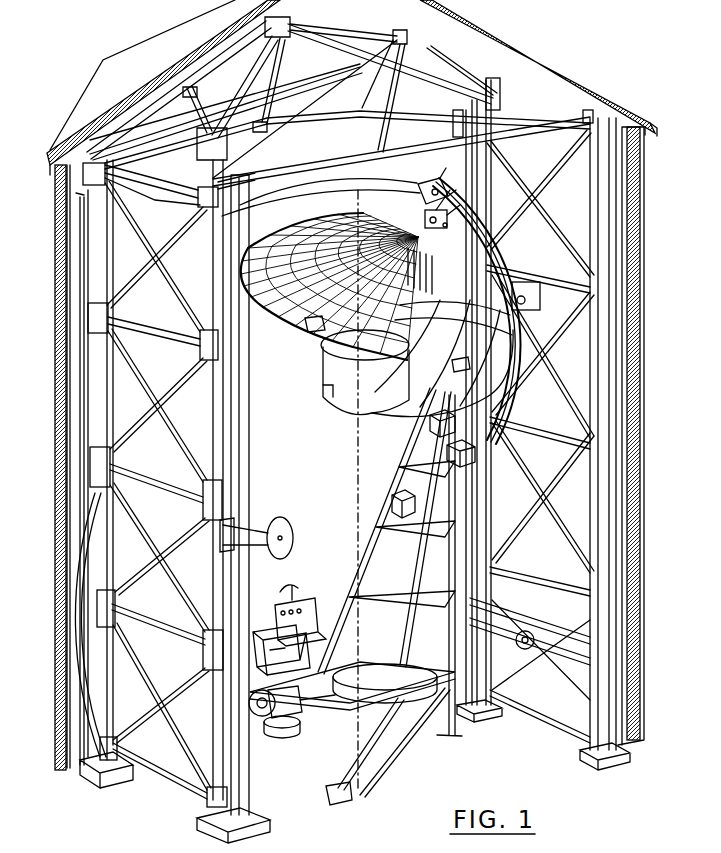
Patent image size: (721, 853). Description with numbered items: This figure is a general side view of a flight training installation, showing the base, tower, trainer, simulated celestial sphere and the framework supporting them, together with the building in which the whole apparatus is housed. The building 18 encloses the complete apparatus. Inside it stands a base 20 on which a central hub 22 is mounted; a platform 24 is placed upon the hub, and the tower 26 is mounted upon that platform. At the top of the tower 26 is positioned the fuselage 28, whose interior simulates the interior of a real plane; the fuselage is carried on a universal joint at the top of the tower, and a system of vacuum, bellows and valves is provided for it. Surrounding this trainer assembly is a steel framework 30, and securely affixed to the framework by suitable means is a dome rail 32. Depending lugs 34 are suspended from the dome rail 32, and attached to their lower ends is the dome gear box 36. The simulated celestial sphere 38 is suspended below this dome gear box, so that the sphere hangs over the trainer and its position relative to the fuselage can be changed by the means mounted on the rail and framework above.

The building 18 is at (52, 391).
The base 20 is at (347, 767).
The central hub 22 is at (350, 717).
The platform 24 is at (320, 707).
The tower 26 is at (367, 505).
The fuselage 28 is at (333, 380).
The steel framework 30 is at (231, 388).
The dome rail 32 is at (507, 262).
The depending lugs 34 is at (452, 198).
The dome gear box 36 is at (447, 208).
The simulated celestial sphere 38 is at (284, 311).